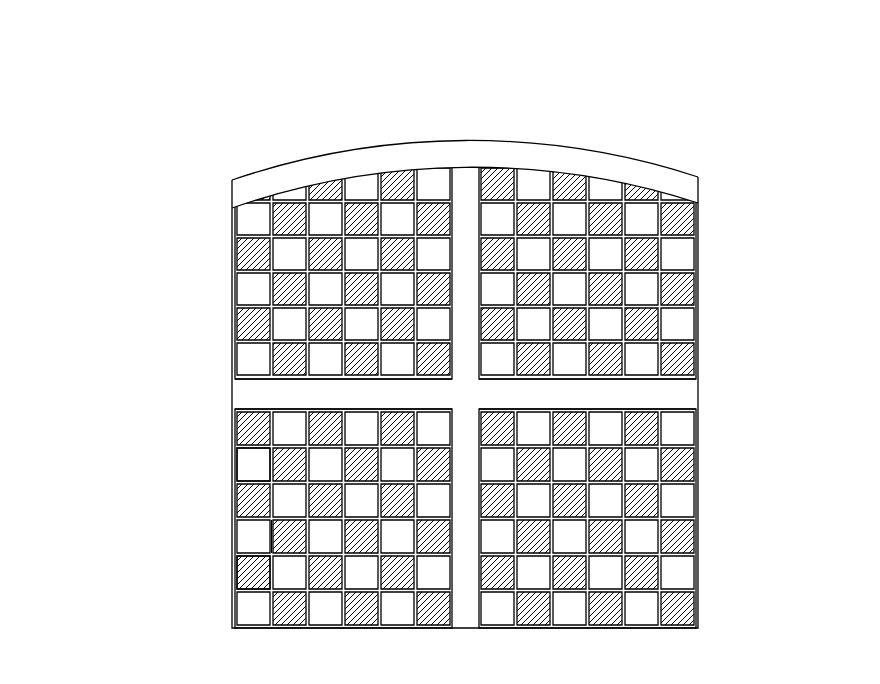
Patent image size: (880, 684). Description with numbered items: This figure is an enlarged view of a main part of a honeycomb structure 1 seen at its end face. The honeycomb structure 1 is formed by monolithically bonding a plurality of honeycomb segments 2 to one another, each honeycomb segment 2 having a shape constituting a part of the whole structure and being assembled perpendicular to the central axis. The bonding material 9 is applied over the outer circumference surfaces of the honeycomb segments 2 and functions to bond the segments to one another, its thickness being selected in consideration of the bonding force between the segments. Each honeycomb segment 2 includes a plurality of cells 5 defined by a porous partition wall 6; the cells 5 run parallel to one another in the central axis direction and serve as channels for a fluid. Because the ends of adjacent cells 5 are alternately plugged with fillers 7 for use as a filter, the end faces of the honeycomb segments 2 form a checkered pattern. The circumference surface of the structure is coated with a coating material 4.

The honeycomb structure 1 is at (440, 314).
The honeycomb segment 2 is at (698, 257).
The coating material 4 is at (474, 152).
The cell 5 is at (243, 463).
The partition wall 6 is at (262, 535).
The filler 7 is at (248, 579).
The bonding material 9 is at (683, 396).